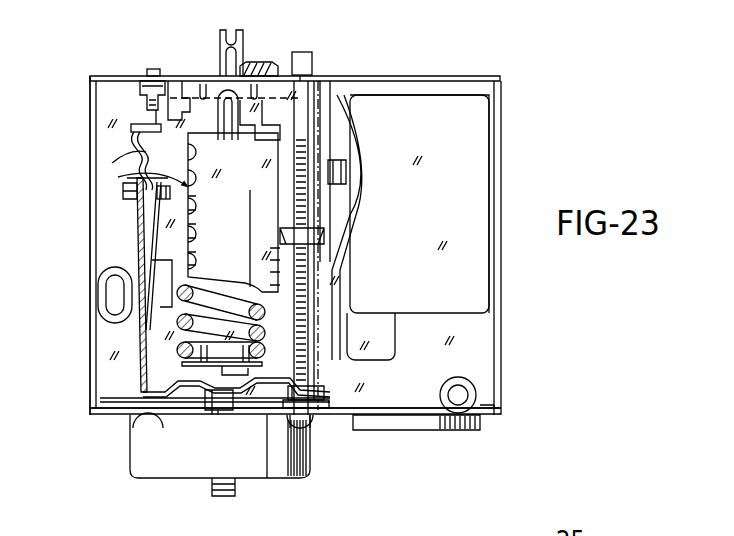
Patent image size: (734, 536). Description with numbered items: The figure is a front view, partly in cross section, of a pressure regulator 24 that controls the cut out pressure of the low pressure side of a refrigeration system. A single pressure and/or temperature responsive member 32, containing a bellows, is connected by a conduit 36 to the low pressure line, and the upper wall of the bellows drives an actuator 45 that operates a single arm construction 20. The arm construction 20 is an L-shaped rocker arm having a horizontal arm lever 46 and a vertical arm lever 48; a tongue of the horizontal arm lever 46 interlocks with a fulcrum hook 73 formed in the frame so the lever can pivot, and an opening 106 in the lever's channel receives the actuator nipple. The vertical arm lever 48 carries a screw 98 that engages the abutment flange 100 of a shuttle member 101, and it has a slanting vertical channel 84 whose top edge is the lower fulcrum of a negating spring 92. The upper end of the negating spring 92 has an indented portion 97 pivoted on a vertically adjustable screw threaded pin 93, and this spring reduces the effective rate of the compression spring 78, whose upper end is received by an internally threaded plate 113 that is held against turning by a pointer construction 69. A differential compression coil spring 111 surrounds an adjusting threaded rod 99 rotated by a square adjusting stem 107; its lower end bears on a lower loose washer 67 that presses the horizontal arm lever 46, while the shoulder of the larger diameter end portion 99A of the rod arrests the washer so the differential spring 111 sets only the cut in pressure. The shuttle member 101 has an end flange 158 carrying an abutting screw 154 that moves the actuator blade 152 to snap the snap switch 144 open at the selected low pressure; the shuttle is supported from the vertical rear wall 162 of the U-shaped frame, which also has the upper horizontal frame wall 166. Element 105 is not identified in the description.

The arm construction 20 is at (126, 332).
The pressure regulator 24 is at (568, 82).
The pressure and/or temperature responsive member 32 is at (138, 465).
The fluid pressure conducting conduit 36 is at (229, 497).
The actuator 45 is at (215, 410).
The horizontal arm lever 46 is at (265, 418).
The vertical arm lever 48 is at (140, 364).
The lower loose washer 67 is at (322, 396).
The pointer construction 69 is at (118, 177).
The fulcrum hook 73 is at (143, 386).
The compression spring 78 is at (177, 348).
The slanting vertical channel 84 is at (157, 209).
The negating spring 92 is at (143, 153).
The screw threaded pin 93 is at (154, 68).
The indented portion 97 is at (150, 119).
The screw 98 is at (125, 200).
The adjusting threaded rod 99 is at (312, 318).
The larger diameter end portion 99A is at (318, 403).
The abutment flange 100 is at (150, 214).
The shuttle member 101 is at (171, 103).
The clip 105 is at (239, 41).
The opening 106 is at (196, 407).
The square adjusting stem 107 is at (300, 52).
The differential compression coil spring 111 is at (317, 390).
The internally threaded plate 113 is at (226, 118).
The snap switch 144 is at (474, 177).
The actuator blade 152 is at (354, 200).
The abutting screw 154 is at (335, 158).
The end flange 158 is at (336, 148).
The vertical rear wall 162 is at (118, 93).
The upper horizontal frame wall 166 is at (458, 80).